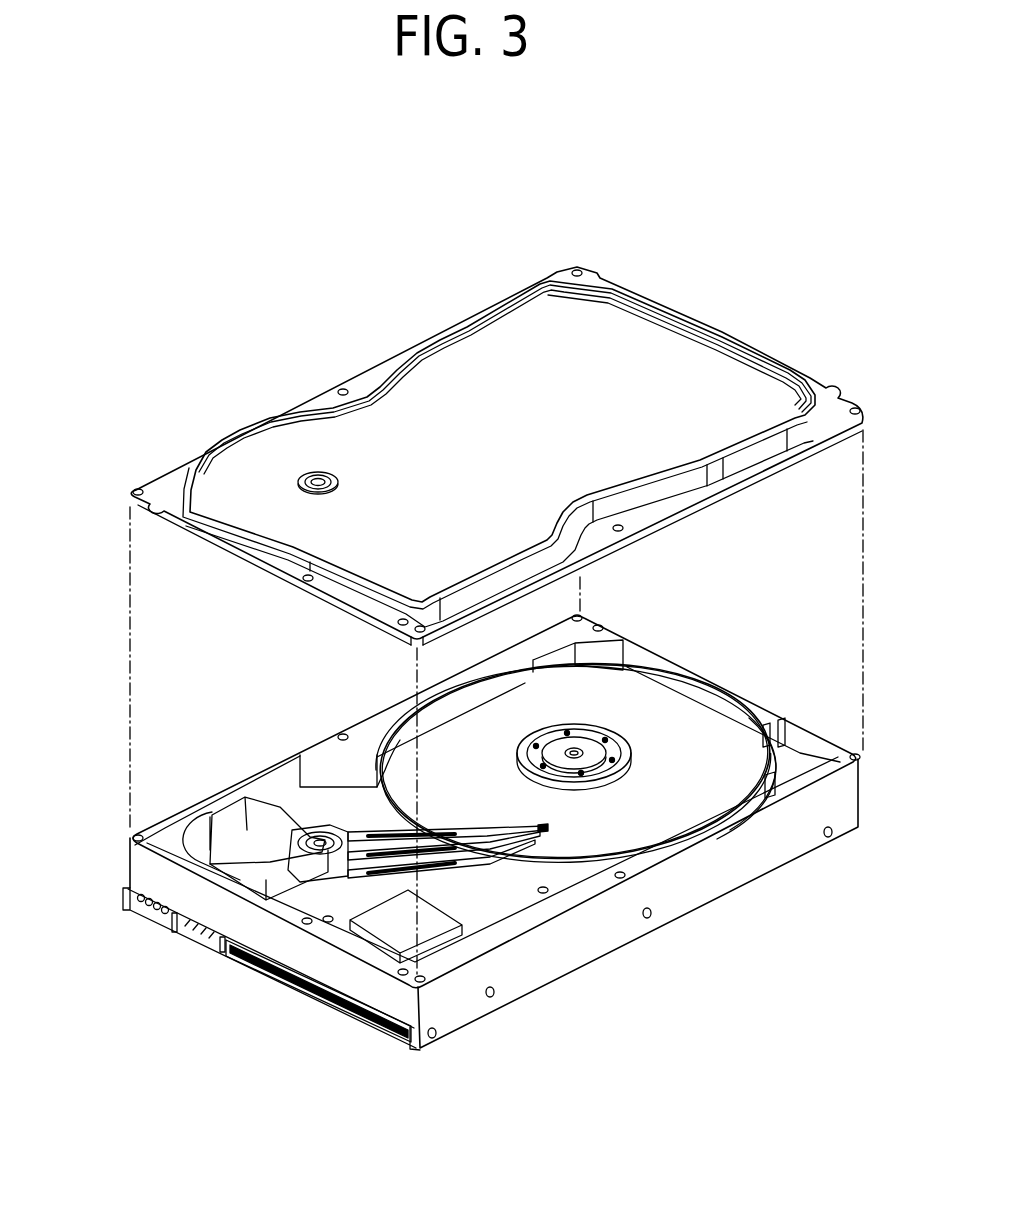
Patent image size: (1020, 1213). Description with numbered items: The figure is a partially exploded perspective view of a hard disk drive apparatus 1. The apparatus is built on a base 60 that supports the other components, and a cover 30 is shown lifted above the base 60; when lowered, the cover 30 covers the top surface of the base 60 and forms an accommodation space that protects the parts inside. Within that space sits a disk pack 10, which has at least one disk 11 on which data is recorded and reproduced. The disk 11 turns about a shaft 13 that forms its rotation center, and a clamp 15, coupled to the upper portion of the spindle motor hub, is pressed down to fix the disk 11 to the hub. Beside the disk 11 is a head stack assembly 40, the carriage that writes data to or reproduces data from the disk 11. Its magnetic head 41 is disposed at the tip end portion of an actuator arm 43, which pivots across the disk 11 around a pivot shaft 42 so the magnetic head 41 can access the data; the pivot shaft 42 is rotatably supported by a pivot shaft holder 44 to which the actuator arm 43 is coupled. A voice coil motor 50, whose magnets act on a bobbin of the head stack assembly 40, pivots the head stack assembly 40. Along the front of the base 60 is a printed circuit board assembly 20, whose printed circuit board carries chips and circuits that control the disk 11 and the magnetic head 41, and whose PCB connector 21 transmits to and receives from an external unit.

The hard disk drive apparatus 1 is at (168, 307).
The disk pack 10 is at (624, 723).
The disk 11 is at (690, 732).
The shaft 13 is at (580, 746).
The clamp 15 is at (635, 752).
The printed circuit board assembly 20 is at (326, 1020).
The PCB connector 21 is at (297, 993).
The cover 30 is at (660, 368).
The head stack assembly 40 is at (333, 814).
The magnetic head 41 is at (547, 828).
The pivot shaft 42 is at (287, 828).
The actuator arm 43 is at (372, 826).
The pivot shaft holder 44 is at (312, 820).
The voice coil motor 50 is at (120, 907).
The base 60 is at (728, 882).